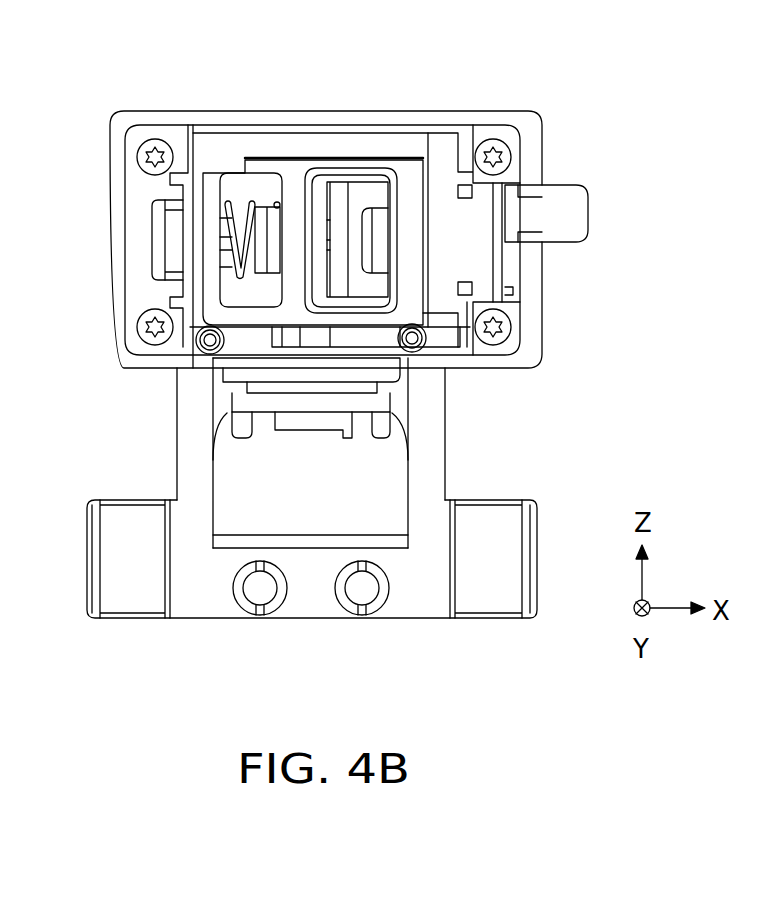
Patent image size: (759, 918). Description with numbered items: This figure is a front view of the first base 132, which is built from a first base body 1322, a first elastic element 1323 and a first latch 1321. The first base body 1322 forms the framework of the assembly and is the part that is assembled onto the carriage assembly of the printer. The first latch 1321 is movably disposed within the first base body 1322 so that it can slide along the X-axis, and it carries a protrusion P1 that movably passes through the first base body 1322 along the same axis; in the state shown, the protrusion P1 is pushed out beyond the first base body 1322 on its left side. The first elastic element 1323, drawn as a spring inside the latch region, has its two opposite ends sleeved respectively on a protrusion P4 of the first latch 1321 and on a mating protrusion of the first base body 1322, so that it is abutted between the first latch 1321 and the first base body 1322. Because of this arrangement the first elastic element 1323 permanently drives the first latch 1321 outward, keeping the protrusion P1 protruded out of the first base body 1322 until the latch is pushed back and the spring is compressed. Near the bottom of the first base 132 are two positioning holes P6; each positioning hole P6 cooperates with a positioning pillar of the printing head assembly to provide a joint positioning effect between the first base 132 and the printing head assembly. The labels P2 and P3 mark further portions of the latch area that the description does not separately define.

The first base 132 is at (641, 64).
The first latch 1321 is at (292, 182).
The first base body 1322 is at (420, 607).
The first elastic element 1323 is at (233, 203).
The protrusion P1 is at (157, 220).
The second portion P2 is at (272, 218).
The third portion P3 is at (382, 230).
The protrusion P4 is at (225, 227).
The positioning hole P6 is at (354, 594).